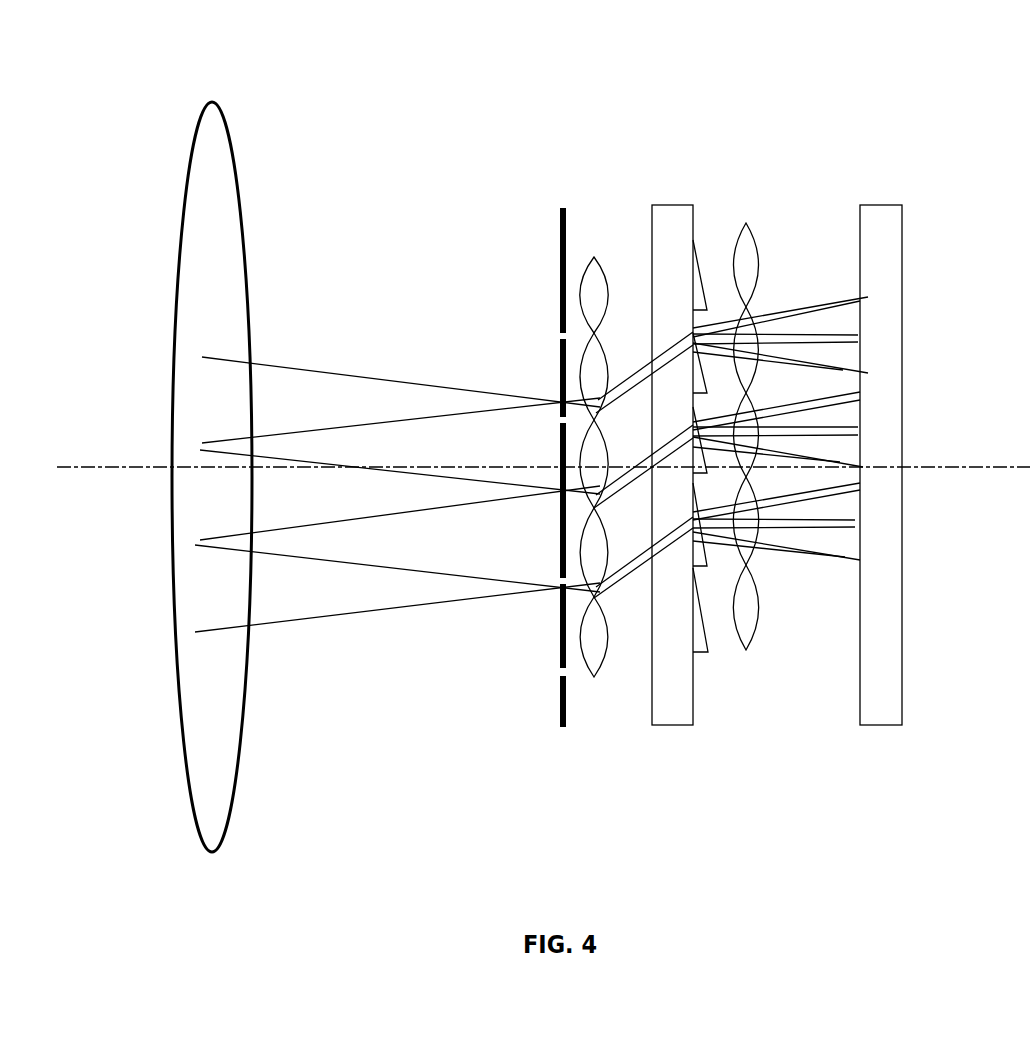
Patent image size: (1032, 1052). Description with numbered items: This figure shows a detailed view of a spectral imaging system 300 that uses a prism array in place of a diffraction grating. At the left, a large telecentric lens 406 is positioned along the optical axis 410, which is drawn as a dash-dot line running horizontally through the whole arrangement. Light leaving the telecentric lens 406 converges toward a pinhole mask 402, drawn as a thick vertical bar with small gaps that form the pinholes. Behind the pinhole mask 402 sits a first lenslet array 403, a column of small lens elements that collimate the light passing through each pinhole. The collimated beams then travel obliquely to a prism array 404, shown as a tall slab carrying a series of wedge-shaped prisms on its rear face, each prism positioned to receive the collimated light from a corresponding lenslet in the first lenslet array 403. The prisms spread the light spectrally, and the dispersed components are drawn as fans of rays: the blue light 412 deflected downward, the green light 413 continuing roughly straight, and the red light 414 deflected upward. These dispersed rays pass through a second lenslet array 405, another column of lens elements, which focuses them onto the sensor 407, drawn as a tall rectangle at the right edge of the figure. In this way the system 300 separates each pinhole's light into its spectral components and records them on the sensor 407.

The imaging system 300 is at (456, 137).
The pinhole mask 402 is at (560, 250).
The first lenslet array 403 is at (595, 257).
The prism array 404 is at (665, 205).
The second lenslet array 405 is at (740, 227).
The telecentric lens 406 is at (214, 103).
The sensor 407 is at (880, 205).
The optical axis 410 is at (973, 467).
The blue light 412 is at (833, 369).
The green light 413 is at (828, 335).
The red light 414 is at (787, 305).